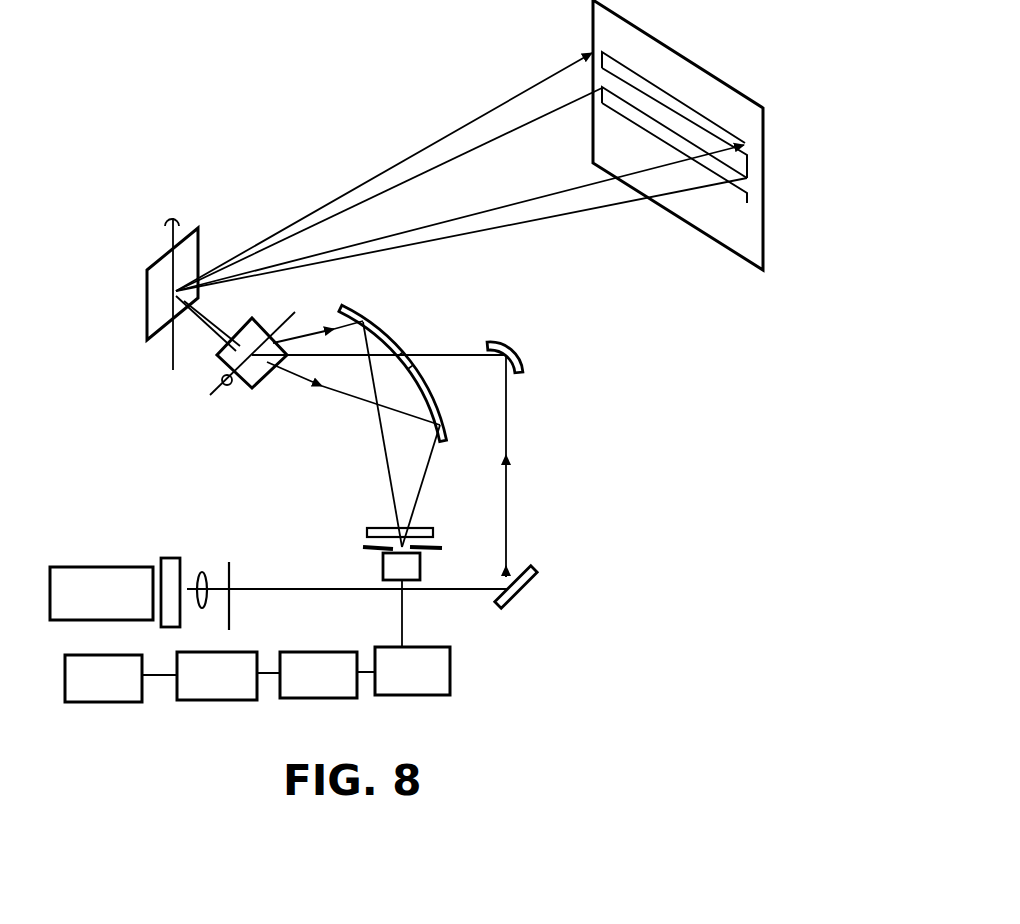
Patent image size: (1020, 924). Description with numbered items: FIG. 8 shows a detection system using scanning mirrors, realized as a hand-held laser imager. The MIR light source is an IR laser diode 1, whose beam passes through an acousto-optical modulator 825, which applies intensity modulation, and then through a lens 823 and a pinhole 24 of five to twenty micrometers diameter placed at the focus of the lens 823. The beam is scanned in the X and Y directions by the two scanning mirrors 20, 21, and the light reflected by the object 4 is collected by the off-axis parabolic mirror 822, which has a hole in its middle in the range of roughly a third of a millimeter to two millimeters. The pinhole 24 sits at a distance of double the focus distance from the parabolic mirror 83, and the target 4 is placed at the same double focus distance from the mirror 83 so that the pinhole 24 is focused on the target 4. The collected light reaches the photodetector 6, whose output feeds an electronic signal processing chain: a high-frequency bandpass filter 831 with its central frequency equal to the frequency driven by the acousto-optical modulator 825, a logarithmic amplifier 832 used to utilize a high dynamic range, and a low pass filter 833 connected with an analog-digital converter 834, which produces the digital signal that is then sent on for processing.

The IR laser diode 1 is at (101, 593).
The object 4 is at (678, 135).
The photodetector 6 is at (401, 567).
The scanning mirror 20 is at (252, 367).
The scanning mirror 21 is at (160, 294).
The pinhole 24 is at (348, 579).
The parabolic mirror 83 is at (518, 347).
The off-axis parabolic mirror 822 is at (402, 326).
The lens 823 is at (201, 572).
The acousto-optical modulator 825 is at (165, 558).
The high-frequency bandpass filter 831 is at (412, 671).
The logarithmic amplifier 832 is at (318, 675).
The low pass filter 833 is at (217, 676).
The analog-digital converter 834 is at (103, 678).